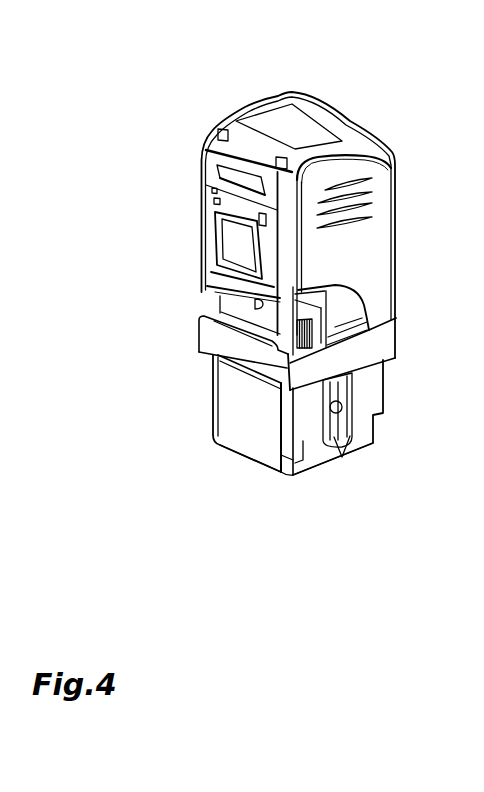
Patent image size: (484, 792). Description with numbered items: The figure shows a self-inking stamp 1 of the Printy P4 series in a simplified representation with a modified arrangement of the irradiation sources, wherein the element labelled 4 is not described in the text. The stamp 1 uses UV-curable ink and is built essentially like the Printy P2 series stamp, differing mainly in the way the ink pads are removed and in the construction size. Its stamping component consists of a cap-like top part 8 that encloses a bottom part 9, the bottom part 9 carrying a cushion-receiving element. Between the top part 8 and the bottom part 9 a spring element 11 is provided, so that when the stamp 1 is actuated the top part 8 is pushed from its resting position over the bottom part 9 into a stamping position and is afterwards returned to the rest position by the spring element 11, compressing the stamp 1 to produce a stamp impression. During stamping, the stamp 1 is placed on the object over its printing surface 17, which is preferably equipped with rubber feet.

The stamp 1 is at (172, 103).
The cradle / holder 4 is at (238, 317).
The top part 8 is at (358, 245).
The bottom part 9 is at (250, 402).
The spring element 11 is at (341, 458).
The printing surface 17 is at (248, 476).